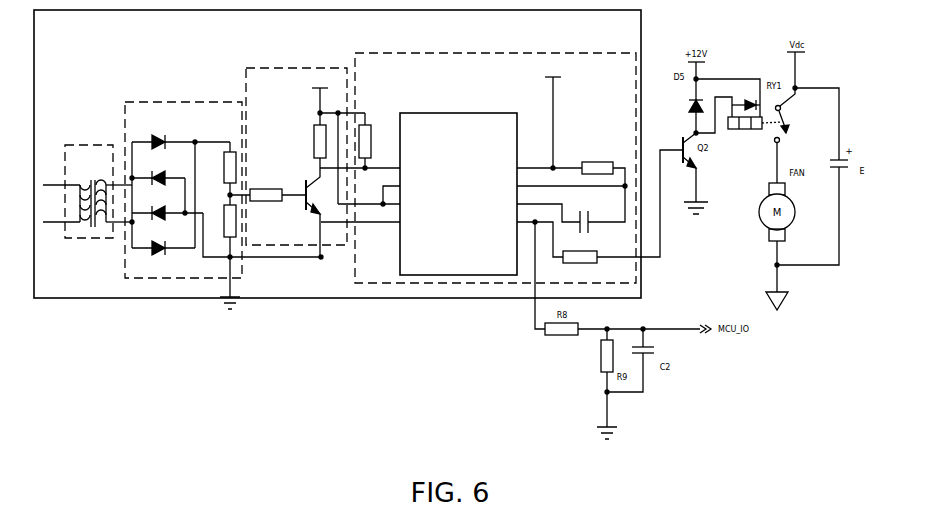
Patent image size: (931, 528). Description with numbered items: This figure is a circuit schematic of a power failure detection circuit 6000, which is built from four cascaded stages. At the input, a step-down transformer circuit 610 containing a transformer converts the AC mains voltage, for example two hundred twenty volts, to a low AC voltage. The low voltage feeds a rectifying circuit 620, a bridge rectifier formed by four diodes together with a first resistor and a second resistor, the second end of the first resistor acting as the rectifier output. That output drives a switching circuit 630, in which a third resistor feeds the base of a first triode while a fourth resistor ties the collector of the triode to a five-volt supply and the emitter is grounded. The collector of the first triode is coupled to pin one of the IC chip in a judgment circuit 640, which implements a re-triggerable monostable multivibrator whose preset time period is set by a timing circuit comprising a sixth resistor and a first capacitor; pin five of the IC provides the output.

The power failure detection circuit 6000 is at (358, 40).
The step-down transformer circuit 610 is at (106, 141).
The rectifying circuit 620 is at (218, 102).
The switching circuit 630 is at (288, 65).
The judgment circuit 640 is at (505, 89).